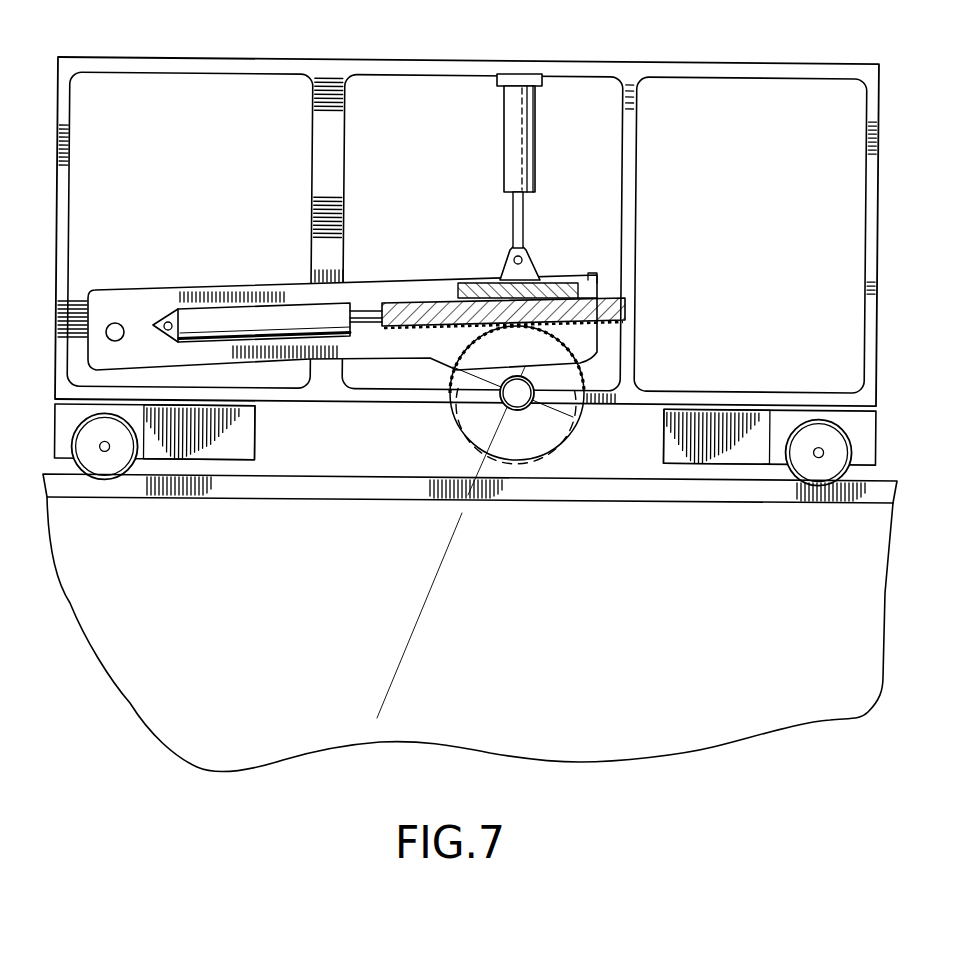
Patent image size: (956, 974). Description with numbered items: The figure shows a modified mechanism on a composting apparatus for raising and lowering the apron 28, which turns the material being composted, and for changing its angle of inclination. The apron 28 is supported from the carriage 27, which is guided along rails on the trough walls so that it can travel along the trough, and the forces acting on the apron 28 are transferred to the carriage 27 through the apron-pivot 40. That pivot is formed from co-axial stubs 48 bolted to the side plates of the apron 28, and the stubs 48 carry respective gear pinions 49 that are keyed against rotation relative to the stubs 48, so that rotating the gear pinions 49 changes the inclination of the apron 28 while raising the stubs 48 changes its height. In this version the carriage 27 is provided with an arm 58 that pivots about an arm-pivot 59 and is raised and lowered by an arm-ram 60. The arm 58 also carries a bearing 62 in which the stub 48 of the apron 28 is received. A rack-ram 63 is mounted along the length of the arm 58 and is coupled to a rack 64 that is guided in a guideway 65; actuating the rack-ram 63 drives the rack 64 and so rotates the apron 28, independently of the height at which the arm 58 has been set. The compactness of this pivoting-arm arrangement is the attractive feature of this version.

The carriage 27 is at (68, 185).
The apron 28 is at (438, 577).
The apron-pivot 40 is at (498, 393).
The co-axial stubs 48 is at (565, 390).
The gear pinions 49 is at (530, 446).
The arm 58 is at (163, 302).
The arm-pivot 59 is at (112, 323).
The arm-ram 60 is at (513, 163).
The bearing 62 is at (497, 404).
The rack-ram 63 is at (214, 312).
The rack 64 is at (443, 302).
The guideway 65 is at (541, 280).